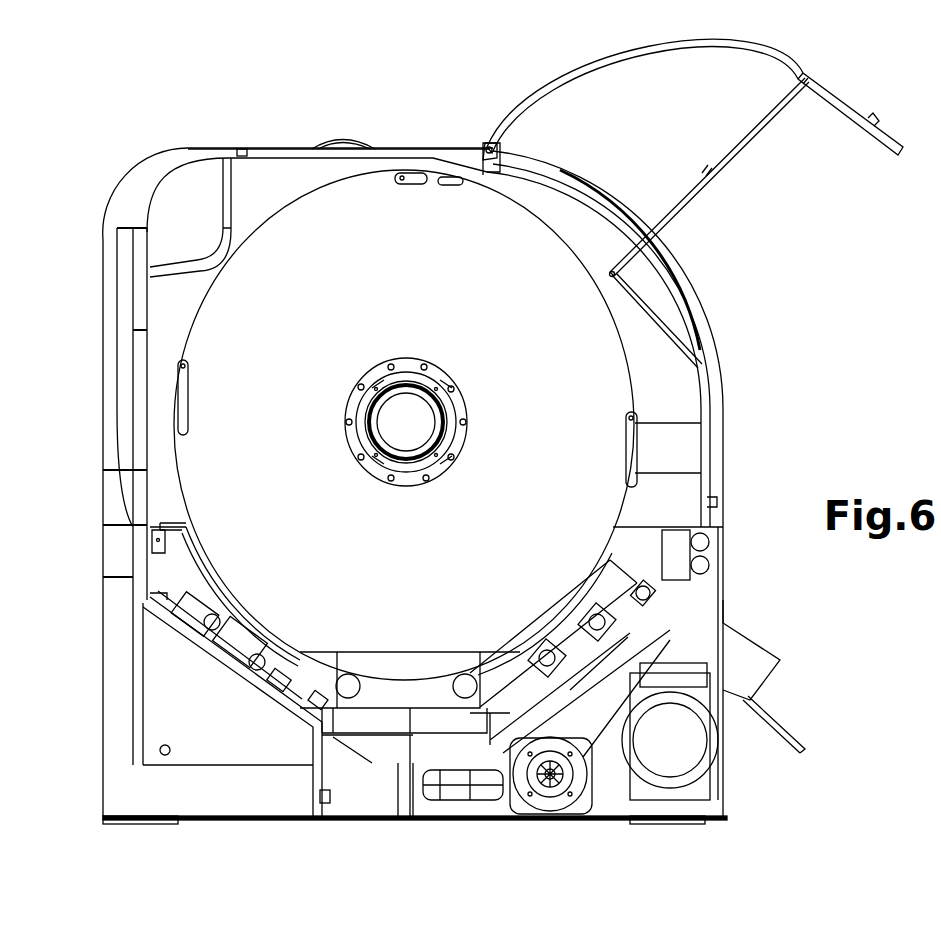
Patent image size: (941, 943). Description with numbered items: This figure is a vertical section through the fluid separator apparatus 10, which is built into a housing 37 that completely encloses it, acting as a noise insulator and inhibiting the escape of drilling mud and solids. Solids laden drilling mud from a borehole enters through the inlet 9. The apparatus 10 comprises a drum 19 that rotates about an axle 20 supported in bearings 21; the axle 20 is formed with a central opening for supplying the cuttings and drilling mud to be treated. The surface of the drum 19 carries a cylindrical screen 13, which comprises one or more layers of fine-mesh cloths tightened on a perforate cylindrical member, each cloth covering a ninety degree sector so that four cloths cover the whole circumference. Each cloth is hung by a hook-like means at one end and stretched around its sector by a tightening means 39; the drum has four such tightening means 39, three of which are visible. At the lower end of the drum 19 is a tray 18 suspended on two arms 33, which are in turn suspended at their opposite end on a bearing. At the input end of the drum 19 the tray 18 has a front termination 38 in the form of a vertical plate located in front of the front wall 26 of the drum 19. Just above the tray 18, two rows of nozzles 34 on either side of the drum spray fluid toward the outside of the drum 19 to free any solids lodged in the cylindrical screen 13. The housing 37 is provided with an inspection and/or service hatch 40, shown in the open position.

The inlet 9 is at (402, 437).
The apparatus 10 is at (280, 140).
The cylindrical screen 13 is at (637, 367).
The tray 18 is at (300, 718).
The drum 19 is at (245, 293).
The axle 20 is at (428, 408).
The bearings 21 is at (427, 392).
The front wall 26 is at (270, 481).
The arms 33 is at (463, 677).
The nozzles 34 is at (255, 657).
The housing 37 is at (395, 149).
The front termination 38 is at (340, 660).
The tightening means 39 is at (418, 187).
The inspection and/or service hatch 40 is at (773, 50).